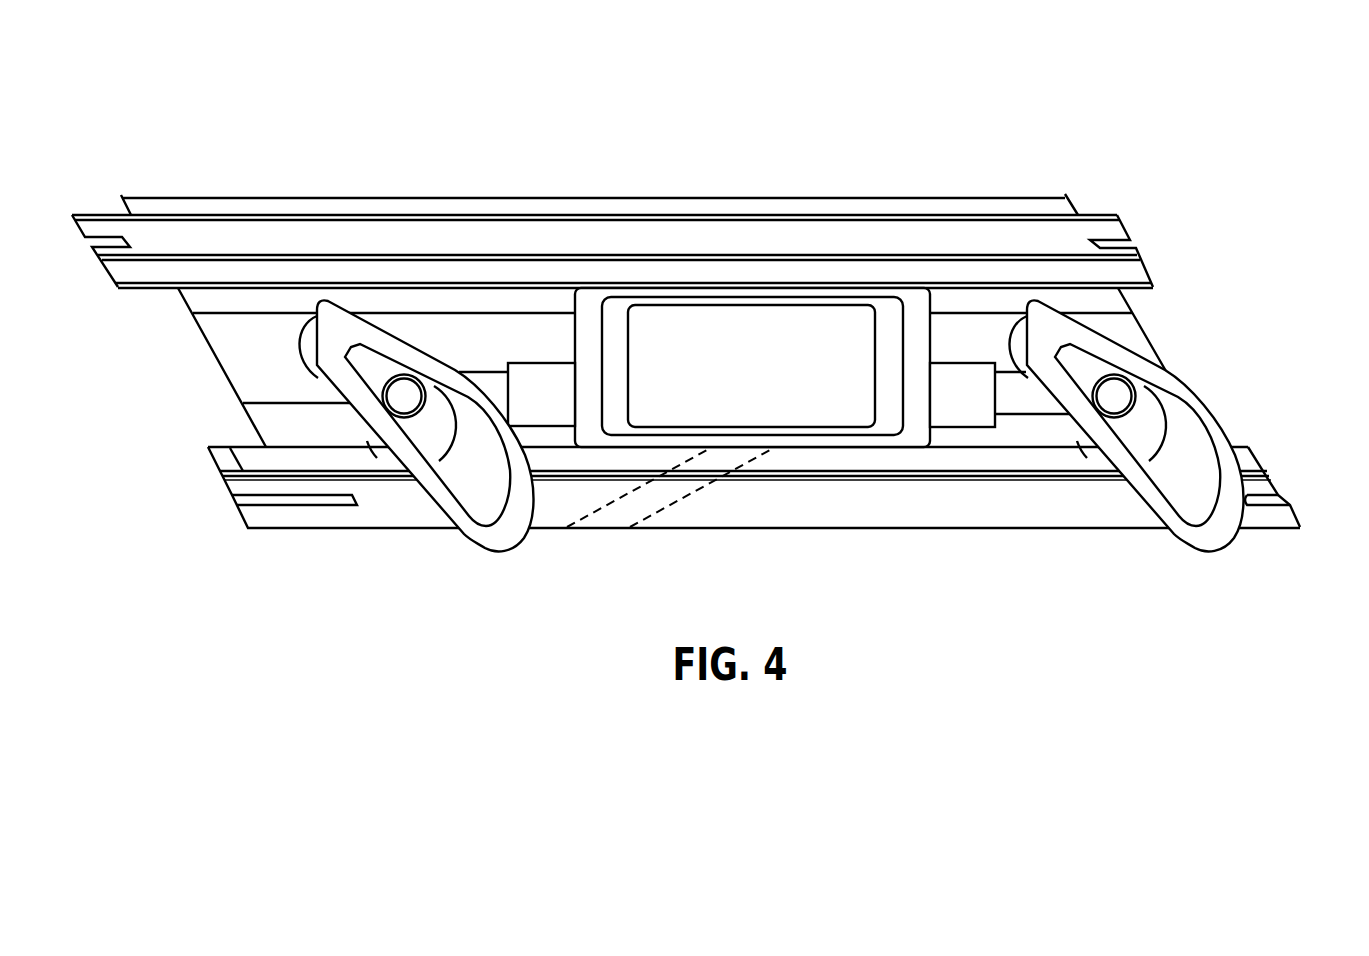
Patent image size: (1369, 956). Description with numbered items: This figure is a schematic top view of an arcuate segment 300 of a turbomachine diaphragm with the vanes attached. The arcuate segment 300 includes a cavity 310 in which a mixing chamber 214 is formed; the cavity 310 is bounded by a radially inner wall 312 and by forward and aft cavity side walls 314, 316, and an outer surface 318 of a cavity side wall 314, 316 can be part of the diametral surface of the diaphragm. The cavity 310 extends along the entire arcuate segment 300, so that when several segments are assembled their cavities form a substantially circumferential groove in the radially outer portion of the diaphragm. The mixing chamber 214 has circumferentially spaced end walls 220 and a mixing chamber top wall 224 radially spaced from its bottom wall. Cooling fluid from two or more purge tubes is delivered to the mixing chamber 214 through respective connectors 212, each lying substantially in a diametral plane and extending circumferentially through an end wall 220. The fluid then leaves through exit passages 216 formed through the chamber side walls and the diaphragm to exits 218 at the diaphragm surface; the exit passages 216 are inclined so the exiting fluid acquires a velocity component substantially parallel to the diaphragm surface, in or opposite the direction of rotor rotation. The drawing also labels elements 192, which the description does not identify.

The arcuate segment 300 is at (298, 140).
The cavity 310 is at (1189, 337).
The radially inner wall 312 is at (1140, 322).
The forward cavity side wall 314 is at (1258, 458).
The aft cavity side wall 316 is at (1135, 273).
The outer surface 318 is at (910, 553).
The clip 192 is at (489, 550).
The connector 212 is at (490, 372).
The mixing chamber 214 is at (768, 297).
The exit passage 216 is at (687, 497).
The exit 218 is at (603, 528).
The mixing chamber end wall 220 is at (553, 340).
The mixing chamber top wall 224 is at (663, 330).